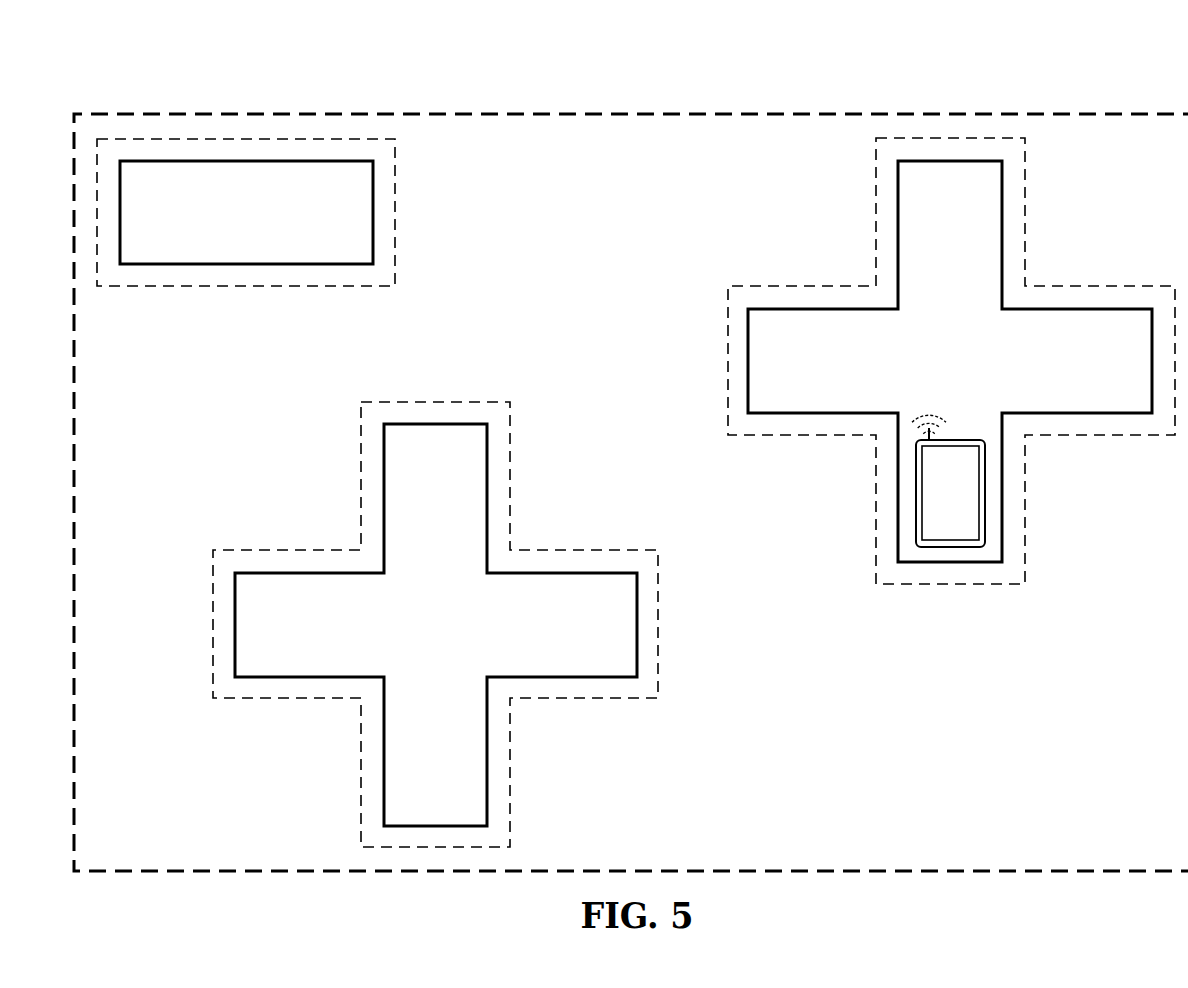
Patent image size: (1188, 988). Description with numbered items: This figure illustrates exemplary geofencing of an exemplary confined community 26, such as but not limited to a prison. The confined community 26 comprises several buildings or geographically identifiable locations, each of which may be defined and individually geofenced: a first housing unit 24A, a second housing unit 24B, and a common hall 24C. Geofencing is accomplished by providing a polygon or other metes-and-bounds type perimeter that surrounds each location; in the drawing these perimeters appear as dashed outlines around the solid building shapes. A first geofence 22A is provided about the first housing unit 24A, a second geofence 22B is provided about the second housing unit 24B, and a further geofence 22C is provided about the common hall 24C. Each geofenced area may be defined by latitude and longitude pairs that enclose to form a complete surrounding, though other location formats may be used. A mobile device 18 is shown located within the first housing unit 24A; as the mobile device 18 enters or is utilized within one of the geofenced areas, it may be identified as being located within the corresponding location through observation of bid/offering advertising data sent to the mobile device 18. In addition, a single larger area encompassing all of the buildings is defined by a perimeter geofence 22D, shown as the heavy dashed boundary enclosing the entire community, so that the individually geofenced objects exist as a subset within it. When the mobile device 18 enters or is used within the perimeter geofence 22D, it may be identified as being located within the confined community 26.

The confined community 26 is at (631, 439).
The perimeter geofence 22D is at (509, 108).
The geofence about the common hall 22C is at (405, 194).
The common hall 24C is at (222, 245).
The first geofence 22A is at (1036, 192).
The first housing unit 24A is at (1052, 377).
The mobile device 18 is at (962, 440).
The second geofence 22B is at (352, 454).
The second housing unit 24B is at (538, 642).